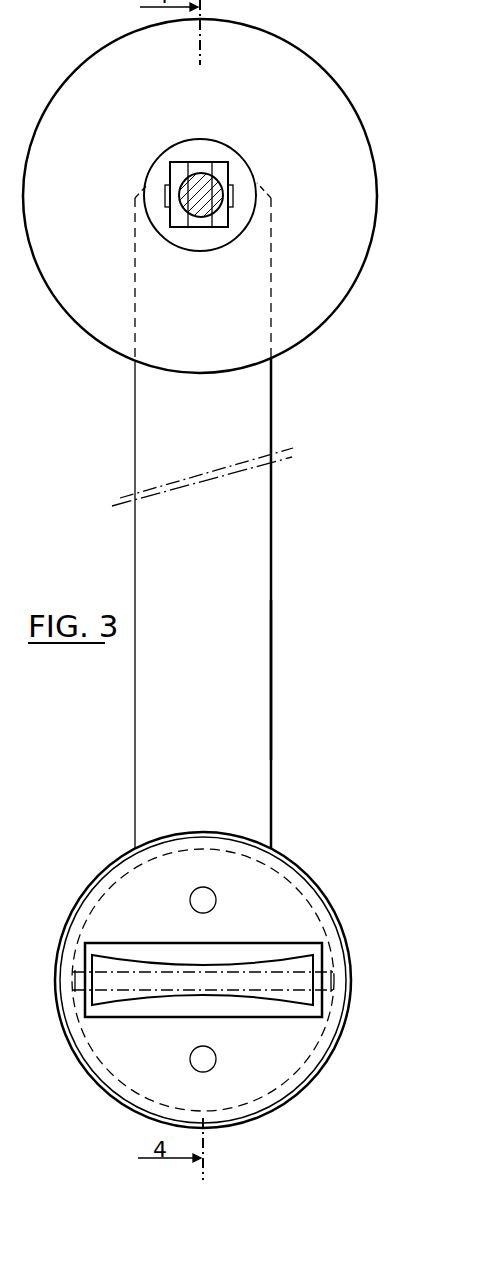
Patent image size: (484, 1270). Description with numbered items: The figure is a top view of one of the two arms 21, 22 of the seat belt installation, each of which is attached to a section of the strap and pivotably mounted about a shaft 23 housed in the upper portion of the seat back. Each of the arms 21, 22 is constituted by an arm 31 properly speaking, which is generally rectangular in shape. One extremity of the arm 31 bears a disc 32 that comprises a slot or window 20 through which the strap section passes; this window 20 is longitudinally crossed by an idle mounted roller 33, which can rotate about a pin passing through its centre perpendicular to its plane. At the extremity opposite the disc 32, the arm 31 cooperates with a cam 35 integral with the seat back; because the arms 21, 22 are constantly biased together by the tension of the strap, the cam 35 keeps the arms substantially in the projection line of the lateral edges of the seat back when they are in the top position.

The cam 35 is at (338, 127).
The shaft 23 is at (180, 184).
The arm properly speaking 31 is at (230, 568).
The arm 21 is at (326, 680).
The arm 22 is at (275, 725).
The disc 32 is at (110, 912).
The slot 20 is at (280, 1003).
The roller 33 is at (273, 978).